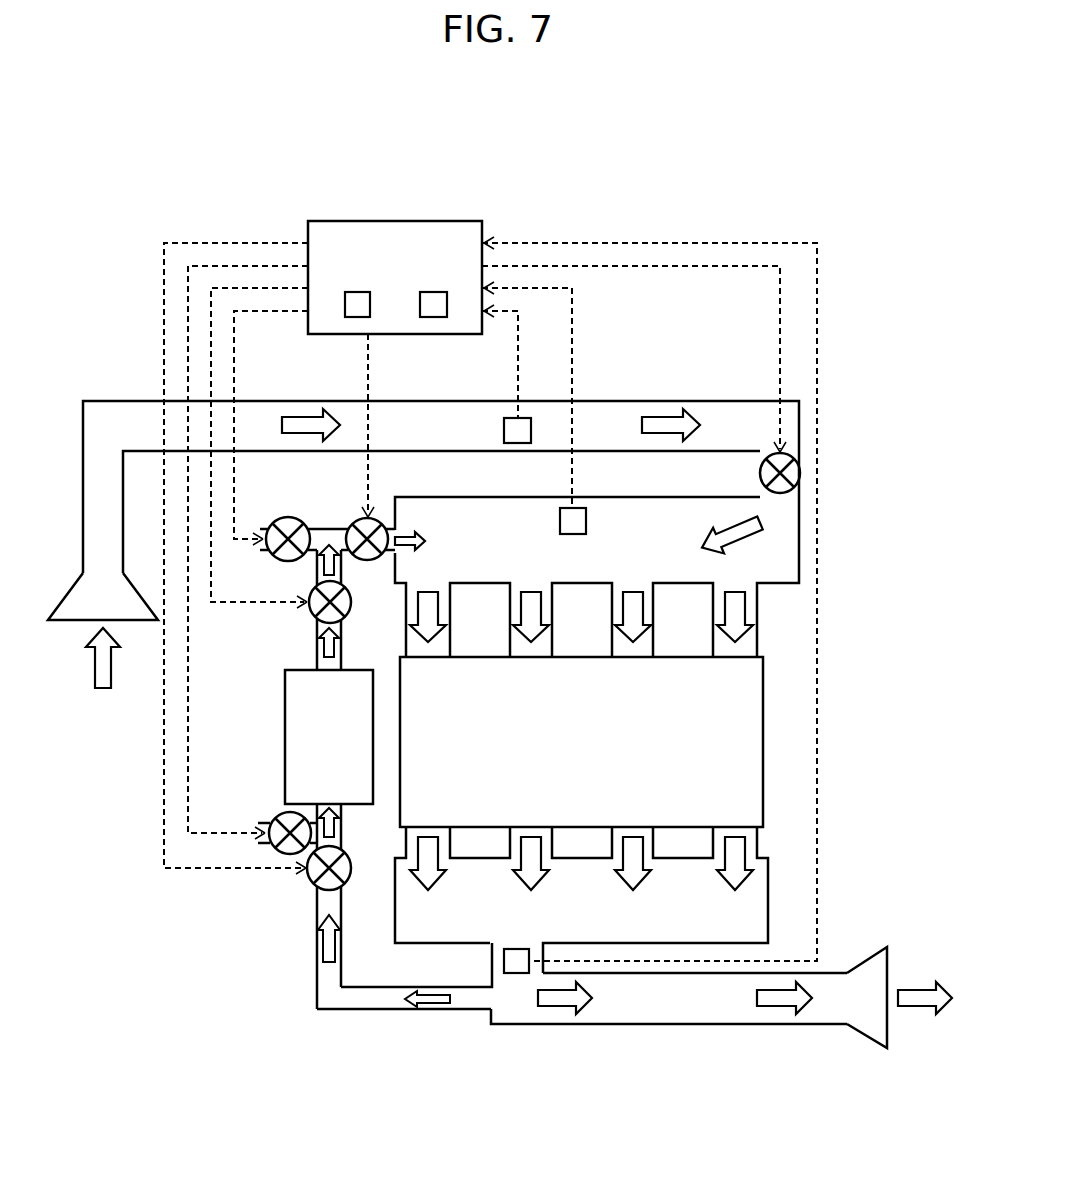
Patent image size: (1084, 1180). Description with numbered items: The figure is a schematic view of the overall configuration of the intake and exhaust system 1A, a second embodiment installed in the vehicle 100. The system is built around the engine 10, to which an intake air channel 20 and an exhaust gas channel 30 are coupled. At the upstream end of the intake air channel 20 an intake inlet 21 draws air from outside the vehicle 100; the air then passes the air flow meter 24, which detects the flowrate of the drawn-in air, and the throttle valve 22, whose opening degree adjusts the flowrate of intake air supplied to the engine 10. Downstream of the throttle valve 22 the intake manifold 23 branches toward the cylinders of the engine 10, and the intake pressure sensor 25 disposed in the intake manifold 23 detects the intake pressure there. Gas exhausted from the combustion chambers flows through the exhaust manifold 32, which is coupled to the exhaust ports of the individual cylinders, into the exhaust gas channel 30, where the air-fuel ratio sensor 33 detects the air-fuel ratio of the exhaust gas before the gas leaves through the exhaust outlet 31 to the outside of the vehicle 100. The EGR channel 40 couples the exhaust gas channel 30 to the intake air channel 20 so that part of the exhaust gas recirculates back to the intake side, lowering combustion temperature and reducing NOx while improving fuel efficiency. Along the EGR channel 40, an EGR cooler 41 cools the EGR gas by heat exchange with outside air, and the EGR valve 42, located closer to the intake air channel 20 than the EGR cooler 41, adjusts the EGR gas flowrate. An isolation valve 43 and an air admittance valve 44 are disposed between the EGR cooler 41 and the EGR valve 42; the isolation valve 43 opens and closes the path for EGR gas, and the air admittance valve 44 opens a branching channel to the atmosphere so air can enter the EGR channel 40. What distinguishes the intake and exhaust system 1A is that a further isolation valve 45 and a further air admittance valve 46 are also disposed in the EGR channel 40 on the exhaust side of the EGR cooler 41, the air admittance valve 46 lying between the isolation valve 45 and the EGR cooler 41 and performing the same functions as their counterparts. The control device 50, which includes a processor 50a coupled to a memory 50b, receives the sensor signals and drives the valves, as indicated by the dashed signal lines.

The vehicle 100 is at (87, 150).
The intake and exhaust system 1A is at (147, 218).
The engine 10 is at (764, 740).
The intake air channel 20 is at (630, 401).
The intake inlet 21 is at (150, 622).
The throttle valve 22 is at (800, 473).
The intake manifold 23 is at (800, 555).
The air flow meter 24 is at (523, 418).
The intake pressure sensor 25 is at (585, 508).
The exhaust gas channel 30 is at (630, 1025).
The exhaust outlet 31 is at (888, 1033).
The exhaust manifold 32 is at (769, 897).
The air-fuel ratio sensor 33 is at (524, 975).
The EGR channel 40 is at (317, 960).
The EGR cooler 41 is at (285, 736).
The EGR valve 42 is at (358, 519).
The isolation valve 43 is at (308, 613).
The air admittance valve 44 is at (283, 518).
The isolation valve 45 is at (308, 880).
The air admittance valve 46 is at (278, 814).
The control device 50 is at (393, 221).
The processor 50a is at (355, 292).
The memory 50b is at (432, 292).